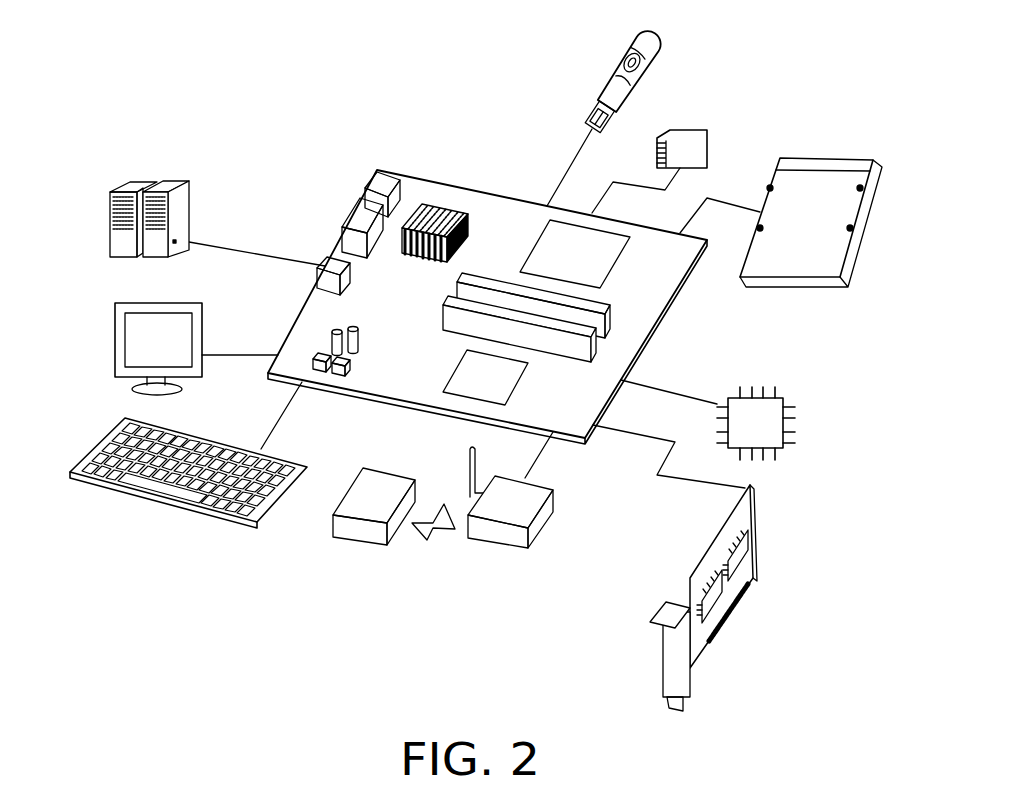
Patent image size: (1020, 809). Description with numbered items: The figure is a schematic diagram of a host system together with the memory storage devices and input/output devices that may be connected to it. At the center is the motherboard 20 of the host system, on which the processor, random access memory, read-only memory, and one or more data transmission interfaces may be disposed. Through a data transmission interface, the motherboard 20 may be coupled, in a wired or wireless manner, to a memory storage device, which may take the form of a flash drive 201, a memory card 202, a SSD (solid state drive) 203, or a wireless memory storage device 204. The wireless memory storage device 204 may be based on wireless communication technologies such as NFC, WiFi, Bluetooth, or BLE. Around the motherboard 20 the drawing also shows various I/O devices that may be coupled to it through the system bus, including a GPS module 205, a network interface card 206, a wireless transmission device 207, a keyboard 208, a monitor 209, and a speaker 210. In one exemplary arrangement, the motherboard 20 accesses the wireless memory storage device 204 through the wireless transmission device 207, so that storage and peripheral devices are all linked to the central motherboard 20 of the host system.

The motherboard 20 is at (490, 213).
The flash drive 201 is at (610, 64).
The memory card 202 is at (707, 138).
The SSD (solid state drive) 203 is at (828, 158).
The wireless memory storage device 204 is at (350, 483).
The GPS module 205 is at (790, 420).
The network interface card 206 is at (753, 542).
The wireless transmission device 207 is at (553, 527).
The keyboard 208 is at (190, 505).
The monitor 209 is at (113, 358).
The speaker 210 is at (110, 243).